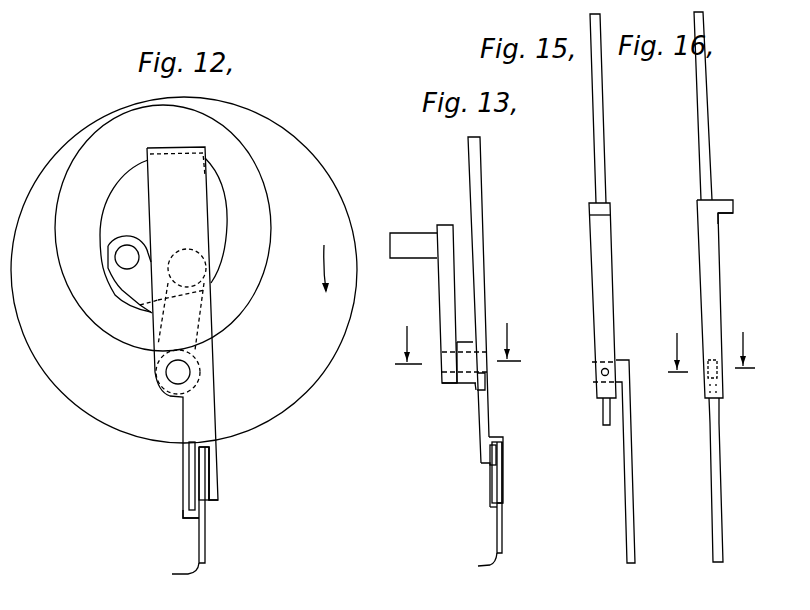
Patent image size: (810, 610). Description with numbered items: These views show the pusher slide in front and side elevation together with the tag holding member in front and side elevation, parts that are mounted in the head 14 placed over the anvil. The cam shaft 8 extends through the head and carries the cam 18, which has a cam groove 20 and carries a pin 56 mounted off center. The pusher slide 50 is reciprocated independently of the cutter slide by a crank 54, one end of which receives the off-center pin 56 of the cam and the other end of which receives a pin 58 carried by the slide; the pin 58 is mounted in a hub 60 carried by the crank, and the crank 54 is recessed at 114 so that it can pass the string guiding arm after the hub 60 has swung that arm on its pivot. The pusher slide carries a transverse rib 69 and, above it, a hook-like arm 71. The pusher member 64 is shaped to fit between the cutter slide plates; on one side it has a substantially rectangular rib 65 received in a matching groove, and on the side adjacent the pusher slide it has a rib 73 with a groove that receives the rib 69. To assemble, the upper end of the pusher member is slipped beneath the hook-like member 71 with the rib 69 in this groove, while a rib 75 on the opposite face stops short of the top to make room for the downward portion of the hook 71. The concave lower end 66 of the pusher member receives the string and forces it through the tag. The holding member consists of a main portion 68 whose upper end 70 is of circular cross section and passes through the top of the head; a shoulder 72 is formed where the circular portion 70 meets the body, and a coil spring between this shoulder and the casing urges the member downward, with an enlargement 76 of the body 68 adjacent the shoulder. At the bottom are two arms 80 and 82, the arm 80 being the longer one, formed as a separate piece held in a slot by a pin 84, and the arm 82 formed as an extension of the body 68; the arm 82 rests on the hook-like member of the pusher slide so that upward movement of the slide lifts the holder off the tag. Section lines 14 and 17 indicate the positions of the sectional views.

In FIG. 12, the cam shaft 8 is at (192, 252).
In FIG. 13, the head 14 is at (454, 343).
In FIG. 15, the section line 17- 17 is at (668, 352).
In FIG. 16, the section line 17- 17 is at (753, 350).
In FIG. 12, the cam 18 is at (319, 163).
In FIG. 12, the cam groove 20 is at (268, 246).
In FIG. 12, the pusher slide 50 is at (205, 150).
In FIG. 13, the pusher slide 50 is at (481, 183).
In FIG. 12, the crank 54 is at (133, 285).
In FIG. 13, the crank 54 is at (440, 297).
In FIG. 12, the pin 56 is at (124, 256).
In FIG. 13, the pin 56 is at (404, 234).
In FIG. 12, the pin 58 is at (172, 377).
In FIG. 13, the pin 58 is at (446, 360).
In FIG. 12, the hub 60 is at (165, 389).
In FIG. 13, the hub 60 is at (454, 385).
In FIG. 12, the pusher member 64 is at (206, 541).
In FIG. 13, the pusher member 64 is at (503, 539).
In FIG. 12, the rib 65 is at (190, 510).
In FIG. 13, the rib 65 is at (496, 500).
In FIG. 12, the concave lower end 66 is at (174, 574).
In FIG. 13, the concave lower end 66 is at (472, 561).
In FIG. 15, the main portion 68 is at (592, 280).
In FIG. 16, the main portion 68 is at (722, 291).
In FIG. 12, the transverse rib 69 is at (189, 463).
In FIG. 13, the transverse rib 69 is at (492, 459).
In FIG. 15, the upper end 70 is at (599, 155).
In FIG. 16, the upper end 70 is at (709, 125).
In FIG. 12, the hook-like arm 71 is at (198, 438).
In FIG. 13, the hook-like arm 71 is at (504, 436).
In FIG. 15, the shoulder 72 is at (608, 206).
In FIG. 16, the shoulder 72 is at (722, 199).
In FIG. 13, the rib 73 is at (491, 494).
In FIG. 12, the rib 75 is at (198, 490).
In FIG. 13, the rib 75 is at (503, 488).
In FIG. 16, the enlargement 76 is at (735, 212).
In FIG. 15, the arm 80 is at (630, 551).
In FIG. 16, the arm 80 is at (722, 538).
In FIG. 15, the arm 82 is at (605, 423).
In FIG. 16, the arm 82 is at (721, 421).
In FIG. 15, the pin 84 is at (601, 373).
In FIG. 16, the pin 84 is at (722, 373).
In FIG. 12, the recess 114 is at (138, 315).